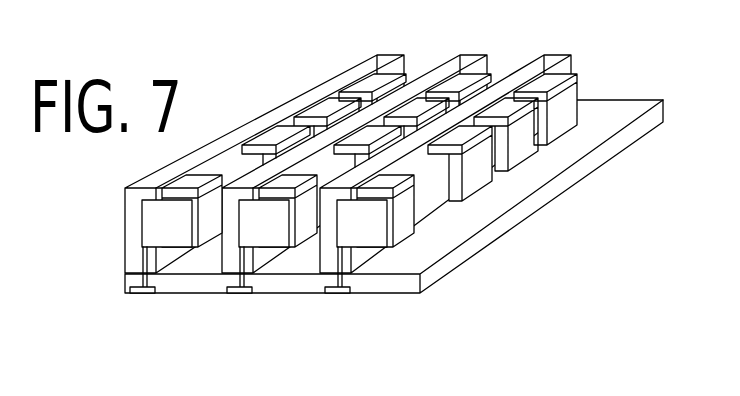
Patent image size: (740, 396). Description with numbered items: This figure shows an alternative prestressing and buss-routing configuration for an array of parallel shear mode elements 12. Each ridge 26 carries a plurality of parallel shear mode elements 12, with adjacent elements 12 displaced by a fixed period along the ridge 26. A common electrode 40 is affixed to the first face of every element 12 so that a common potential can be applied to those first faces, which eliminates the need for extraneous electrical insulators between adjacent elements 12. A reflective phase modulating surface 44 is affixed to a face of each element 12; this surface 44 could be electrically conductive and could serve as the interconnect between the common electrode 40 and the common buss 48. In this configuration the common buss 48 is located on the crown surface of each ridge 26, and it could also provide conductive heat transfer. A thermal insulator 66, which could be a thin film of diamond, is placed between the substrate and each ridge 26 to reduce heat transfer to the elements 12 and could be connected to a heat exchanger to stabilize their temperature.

The reflective phase modulating surface 44 is at (545, 81).
The common buss 48 is at (372, 62).
The common electrode 40 is at (400, 222).
The ridge 26 is at (135, 213).
The shear mode element 12 is at (365, 223).
The thermal insulator 66 is at (133, 273).